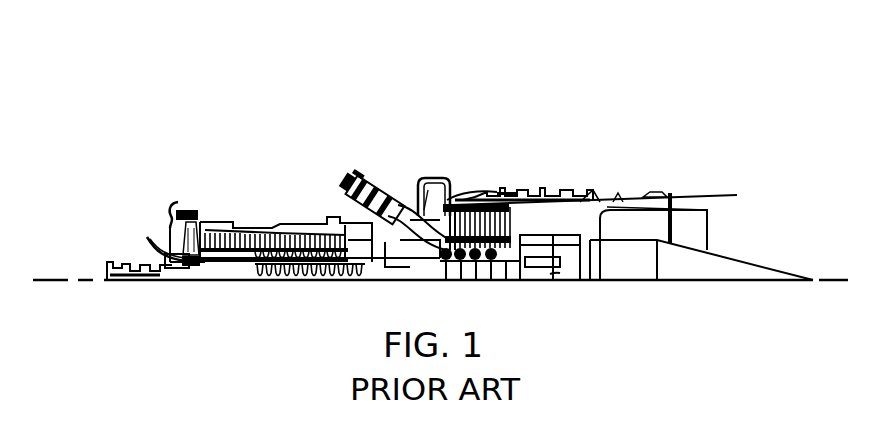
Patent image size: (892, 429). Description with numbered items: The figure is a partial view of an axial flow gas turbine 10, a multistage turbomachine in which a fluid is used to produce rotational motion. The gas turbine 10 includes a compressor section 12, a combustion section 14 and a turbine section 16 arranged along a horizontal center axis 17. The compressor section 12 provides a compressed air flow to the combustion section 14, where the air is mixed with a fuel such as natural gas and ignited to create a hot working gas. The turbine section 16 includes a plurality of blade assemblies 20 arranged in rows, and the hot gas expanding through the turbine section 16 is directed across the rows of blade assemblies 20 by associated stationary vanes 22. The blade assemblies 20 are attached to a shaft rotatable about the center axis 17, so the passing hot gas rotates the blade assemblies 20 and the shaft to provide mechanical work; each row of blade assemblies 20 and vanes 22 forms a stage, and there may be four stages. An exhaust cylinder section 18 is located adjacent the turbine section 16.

The axial flow gas turbine 10 is at (162, 108).
The compressor section 12 is at (297, 217).
The combustion section 14 is at (438, 190).
The turbine section 16 is at (477, 193).
The horizontal center axis 17 is at (52, 280).
The exhaust cylinder section 18 is at (542, 187).
The blade assemblies 20 is at (506, 167).
The stationary vanes 22 is at (465, 186).